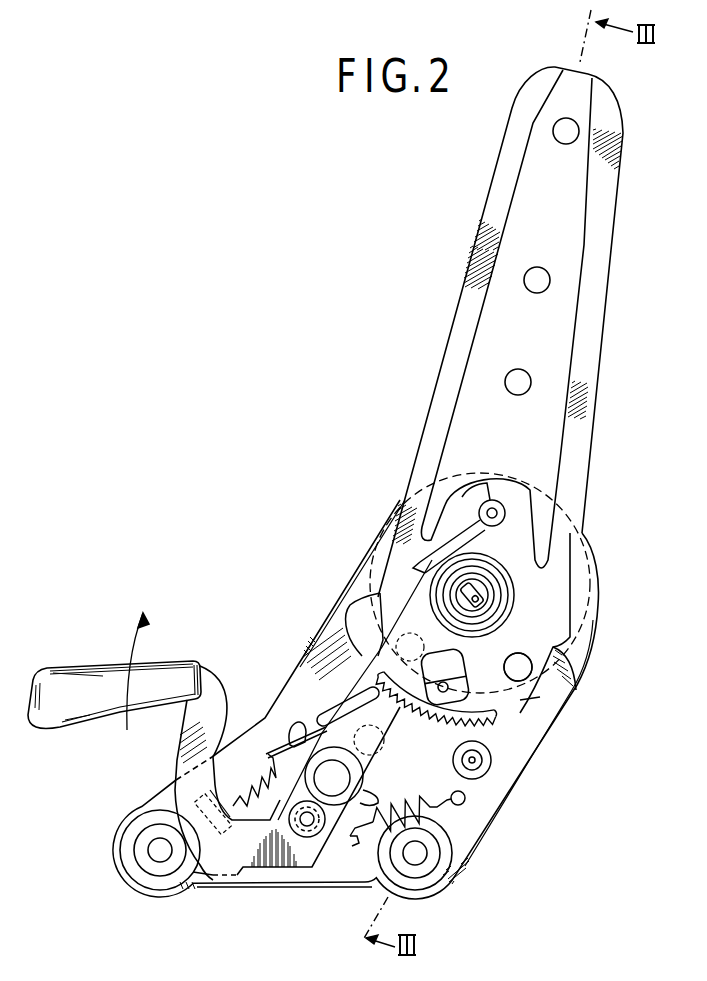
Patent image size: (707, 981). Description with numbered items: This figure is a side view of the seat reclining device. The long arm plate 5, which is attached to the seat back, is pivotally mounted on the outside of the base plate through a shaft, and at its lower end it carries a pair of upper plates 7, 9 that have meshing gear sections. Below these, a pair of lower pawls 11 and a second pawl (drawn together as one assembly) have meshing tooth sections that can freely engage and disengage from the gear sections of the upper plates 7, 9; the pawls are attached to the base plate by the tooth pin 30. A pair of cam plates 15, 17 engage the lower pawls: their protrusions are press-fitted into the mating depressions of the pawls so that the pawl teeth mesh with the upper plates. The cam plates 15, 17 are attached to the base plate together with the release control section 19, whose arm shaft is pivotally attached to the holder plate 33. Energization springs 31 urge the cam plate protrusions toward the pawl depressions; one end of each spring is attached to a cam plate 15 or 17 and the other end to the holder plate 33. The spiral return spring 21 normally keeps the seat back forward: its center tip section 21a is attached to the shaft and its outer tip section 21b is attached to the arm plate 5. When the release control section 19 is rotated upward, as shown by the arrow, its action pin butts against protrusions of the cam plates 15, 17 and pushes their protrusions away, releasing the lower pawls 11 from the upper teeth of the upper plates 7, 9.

The arm plate 5 is at (600, 316).
The upper plate 7 is at (540, 697).
The upper plate 9 is at (518, 667).
The lower pawl 11 is at (495, 778).
The cam plate 15 is at (299, 717).
The cam plate 17 is at (353, 843).
The release control section 19 is at (185, 668).
The return spring 21 is at (414, 571).
The center tip section 21a is at (480, 605).
The outer tip section 21b is at (483, 484).
The tooth pin 30 is at (343, 777).
The energization spring 31 is at (272, 758).
The holder plate 33 is at (500, 730).